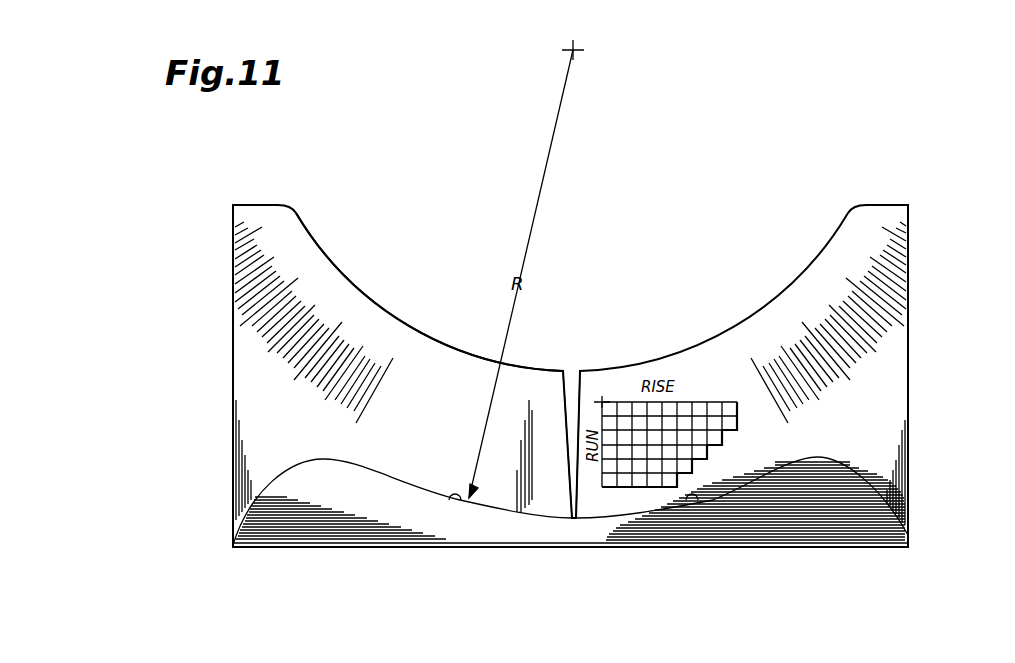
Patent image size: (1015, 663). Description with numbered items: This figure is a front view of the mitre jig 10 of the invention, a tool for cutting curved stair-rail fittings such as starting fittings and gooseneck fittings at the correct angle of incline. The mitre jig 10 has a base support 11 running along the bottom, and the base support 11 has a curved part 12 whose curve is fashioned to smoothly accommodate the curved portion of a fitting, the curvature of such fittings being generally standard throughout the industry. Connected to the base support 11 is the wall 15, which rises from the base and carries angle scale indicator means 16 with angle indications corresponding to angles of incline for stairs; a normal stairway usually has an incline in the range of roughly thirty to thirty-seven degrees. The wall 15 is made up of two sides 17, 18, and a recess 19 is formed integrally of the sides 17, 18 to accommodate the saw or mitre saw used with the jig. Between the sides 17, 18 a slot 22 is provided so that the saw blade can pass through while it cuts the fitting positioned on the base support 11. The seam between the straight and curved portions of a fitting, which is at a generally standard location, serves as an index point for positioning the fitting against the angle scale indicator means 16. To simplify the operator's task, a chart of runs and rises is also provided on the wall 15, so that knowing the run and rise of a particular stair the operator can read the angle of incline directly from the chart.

The mitre jig 10 is at (218, 263).
The base support 11 is at (302, 532).
The curved part 12 is at (450, 501).
The wall 15 is at (912, 237).
The angle scale indicator means 16 is at (352, 352).
The side 17 is at (268, 414).
The side 18 is at (866, 437).
The recess 19 is at (442, 337).
The slot 22 is at (570, 372).